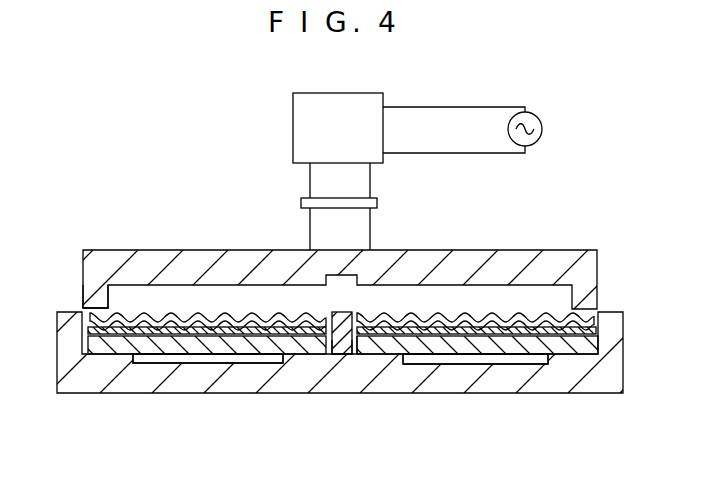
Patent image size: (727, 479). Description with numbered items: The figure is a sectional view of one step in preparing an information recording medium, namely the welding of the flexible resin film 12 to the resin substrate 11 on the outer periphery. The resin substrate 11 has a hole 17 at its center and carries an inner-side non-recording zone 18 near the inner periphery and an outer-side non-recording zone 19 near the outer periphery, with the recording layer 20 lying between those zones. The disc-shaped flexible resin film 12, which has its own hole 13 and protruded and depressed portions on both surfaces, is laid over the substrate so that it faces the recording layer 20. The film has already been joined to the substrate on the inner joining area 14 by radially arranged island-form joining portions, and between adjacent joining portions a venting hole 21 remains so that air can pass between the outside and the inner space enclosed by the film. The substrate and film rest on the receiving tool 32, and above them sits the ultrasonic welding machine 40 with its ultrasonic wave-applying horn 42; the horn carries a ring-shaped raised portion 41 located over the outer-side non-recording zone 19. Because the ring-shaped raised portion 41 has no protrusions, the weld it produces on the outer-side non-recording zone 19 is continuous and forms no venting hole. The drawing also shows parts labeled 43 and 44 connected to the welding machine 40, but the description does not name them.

The resin substrate 11 is at (393, 348).
The flexible resin film 12 is at (253, 322).
The hole 13 is at (357, 312).
The inner joining area 14 is at (320, 340).
The hole 17 is at (342, 346).
The inner-side non-recording zone 18 is at (310, 336).
The outer-side non-recording zone 19 is at (115, 332).
The recording layer 20 is at (478, 334).
The venting hole 21 is at (361, 344).
The receiving tool 32 is at (162, 384).
The ultrasonic welding machine 40 is at (292, 181).
The ring-shaped raised portion 41 is at (93, 303).
The ultrasonic wave-applying horn 42 is at (528, 262).
The AC power source 43 is at (543, 126).
The matching box 44 is at (353, 93).